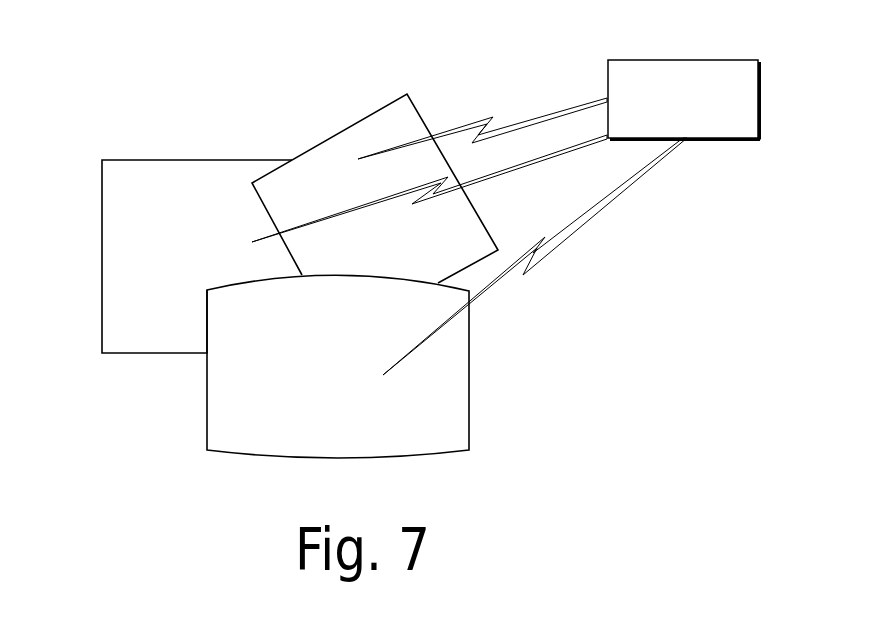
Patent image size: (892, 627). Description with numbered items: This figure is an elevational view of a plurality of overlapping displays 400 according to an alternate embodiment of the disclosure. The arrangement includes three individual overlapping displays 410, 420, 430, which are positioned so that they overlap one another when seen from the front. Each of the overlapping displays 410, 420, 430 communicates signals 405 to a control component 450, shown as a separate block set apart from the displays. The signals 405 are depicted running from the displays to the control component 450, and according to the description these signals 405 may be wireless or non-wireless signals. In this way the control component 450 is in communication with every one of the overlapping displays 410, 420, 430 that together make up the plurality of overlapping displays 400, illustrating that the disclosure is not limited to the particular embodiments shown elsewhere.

The plurality of overlapping displays 400 is at (205, 78).
The signals 405 is at (483, 119).
The overlapping display 410 is at (150, 136).
The overlapping display 420 is at (348, 106).
The overlapping display 430 is at (190, 432).
The control component 450 is at (684, 100).